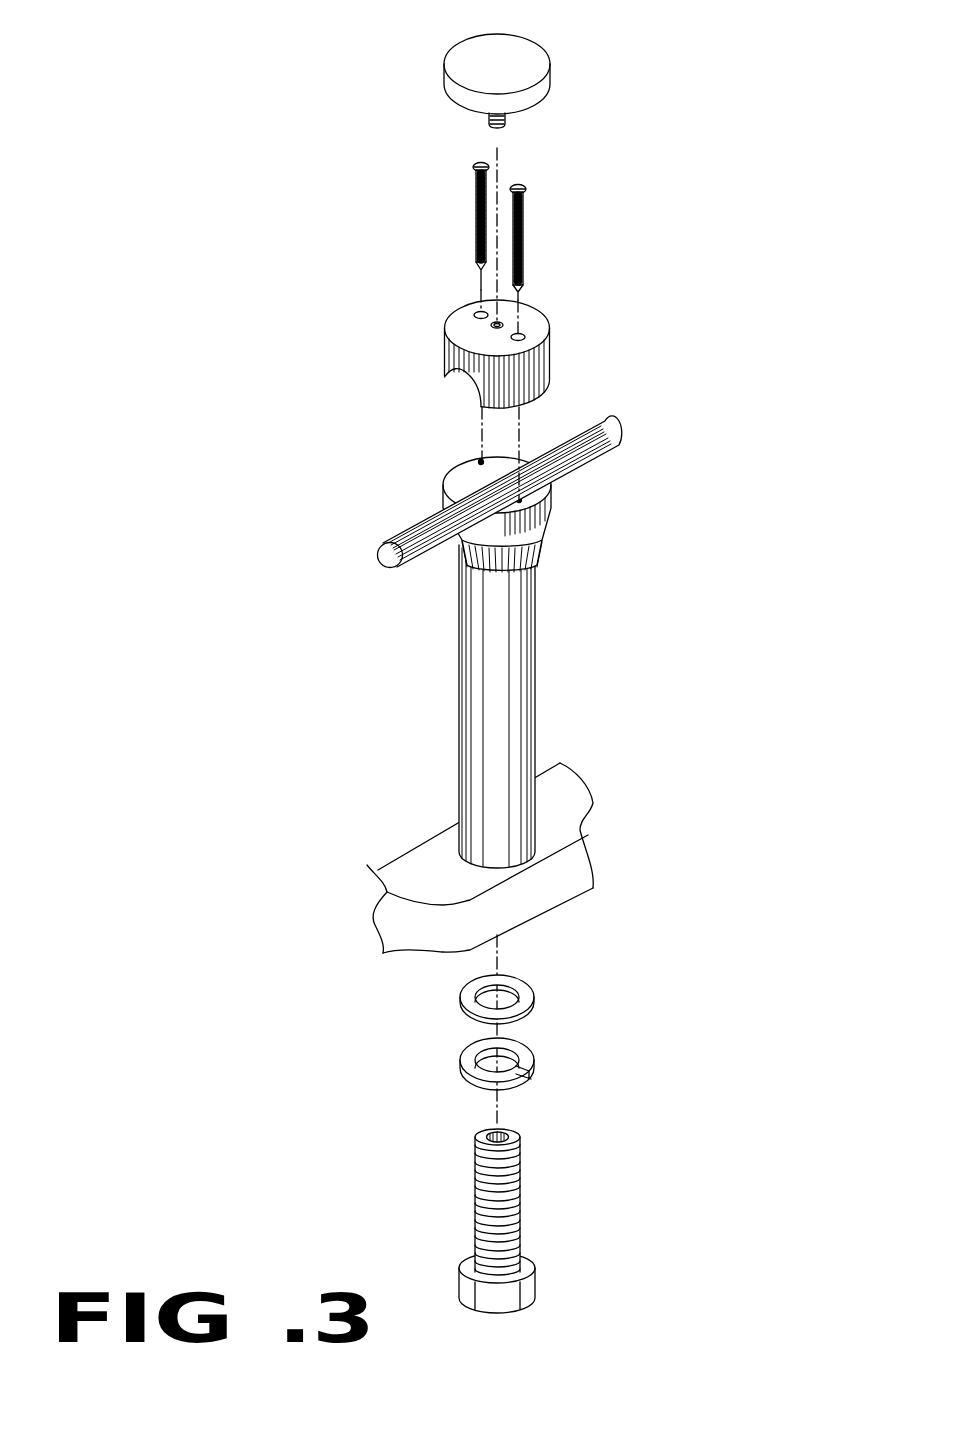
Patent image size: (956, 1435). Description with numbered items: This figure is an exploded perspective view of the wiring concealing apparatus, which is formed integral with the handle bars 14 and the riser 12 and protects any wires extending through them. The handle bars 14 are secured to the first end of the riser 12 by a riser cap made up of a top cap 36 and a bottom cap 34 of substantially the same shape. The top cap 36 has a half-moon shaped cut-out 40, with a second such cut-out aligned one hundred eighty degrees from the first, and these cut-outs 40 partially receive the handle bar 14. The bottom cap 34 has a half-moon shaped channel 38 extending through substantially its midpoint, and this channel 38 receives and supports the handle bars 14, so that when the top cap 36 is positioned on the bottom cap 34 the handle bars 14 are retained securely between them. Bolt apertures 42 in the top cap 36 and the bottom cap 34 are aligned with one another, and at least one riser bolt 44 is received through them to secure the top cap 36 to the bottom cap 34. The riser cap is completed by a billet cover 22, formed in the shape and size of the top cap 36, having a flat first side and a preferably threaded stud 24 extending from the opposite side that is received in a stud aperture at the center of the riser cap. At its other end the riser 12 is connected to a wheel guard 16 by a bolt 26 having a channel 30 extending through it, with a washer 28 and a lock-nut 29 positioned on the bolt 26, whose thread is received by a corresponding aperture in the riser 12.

The riser 12 is at (527, 641).
The handle bars 14 is at (377, 527).
The wheel guard 16 is at (577, 817).
The billet cover 22 is at (517, 53).
The stud 24 is at (487, 117).
The bolt 26 is at (475, 1208).
The washer 28 is at (527, 983).
The lock-nut 29 is at (532, 1050).
The channel 30 is at (507, 1133).
The bottom cap 34 is at (460, 548).
The top cap 36 is at (445, 332).
The half-moon shaped channel 38 is at (460, 540).
The half-moon shaped cut-out 40 is at (467, 382).
The bolt aperture 42 is at (520, 312).
The riser bolt 44 is at (518, 208).